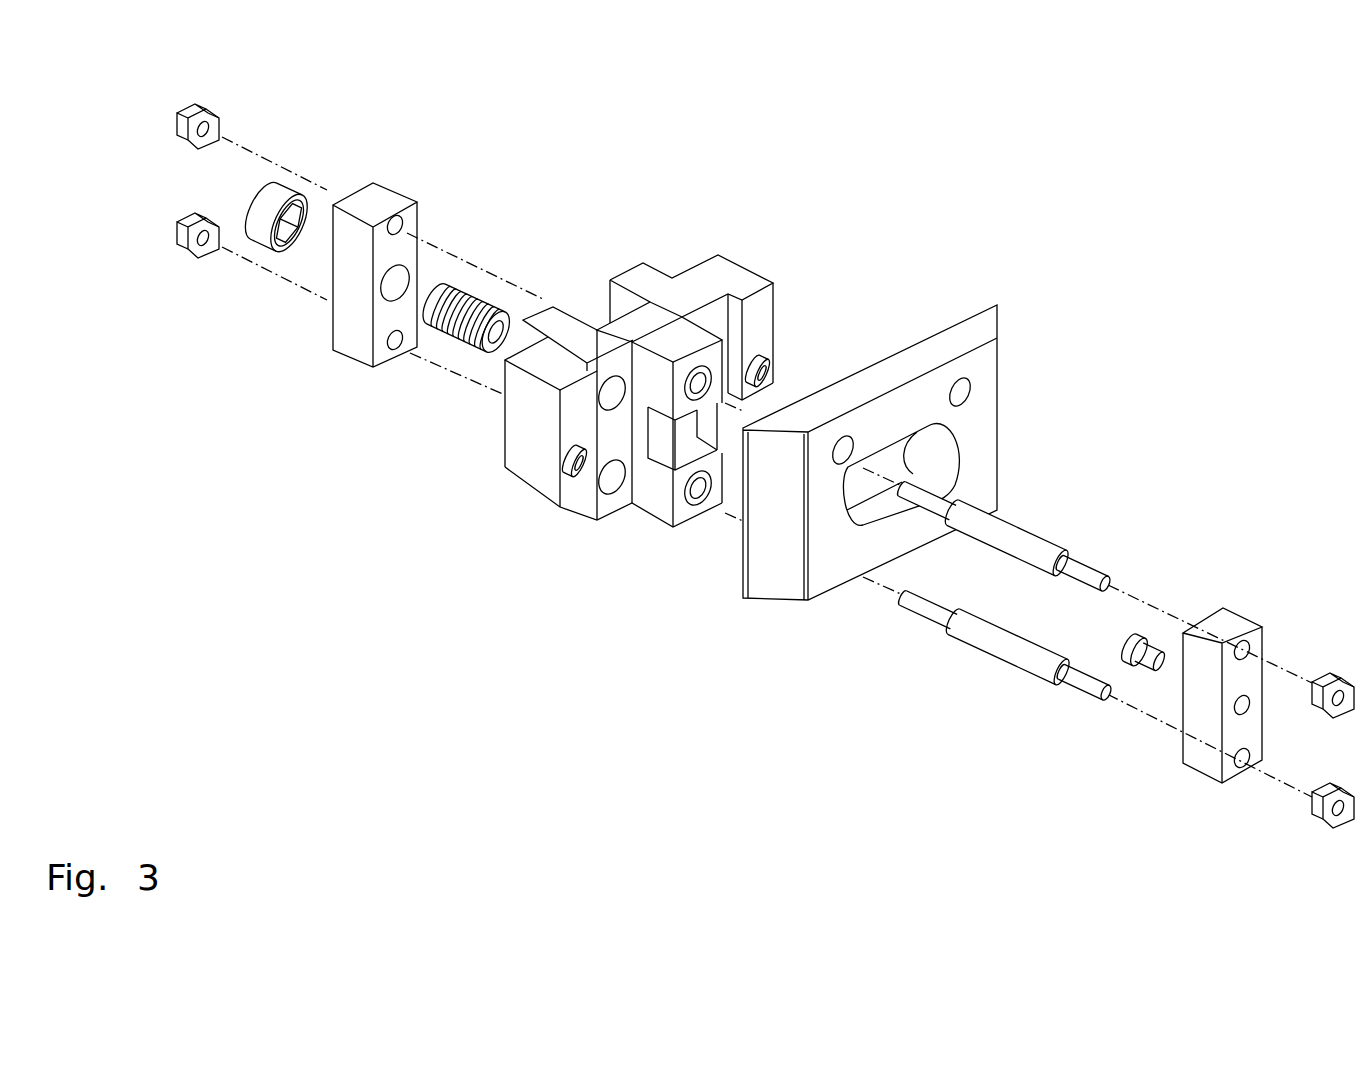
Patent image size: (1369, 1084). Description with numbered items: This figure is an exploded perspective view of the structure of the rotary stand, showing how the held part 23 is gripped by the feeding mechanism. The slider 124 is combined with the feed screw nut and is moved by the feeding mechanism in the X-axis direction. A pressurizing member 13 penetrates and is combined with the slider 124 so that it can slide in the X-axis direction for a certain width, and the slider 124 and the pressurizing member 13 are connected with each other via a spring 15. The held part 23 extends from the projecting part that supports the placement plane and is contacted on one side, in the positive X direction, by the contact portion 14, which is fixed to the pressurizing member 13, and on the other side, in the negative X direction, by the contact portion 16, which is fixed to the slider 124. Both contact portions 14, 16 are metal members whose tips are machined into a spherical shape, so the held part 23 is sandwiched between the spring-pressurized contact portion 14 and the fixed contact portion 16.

The pressurizing member 13 is at (1190, 767).
The contact portion 14 is at (1147, 640).
The spring 15 is at (493, 277).
The contact portion 16 is at (572, 486).
The held part 23 is at (990, 317).
The slider 124 is at (725, 267).